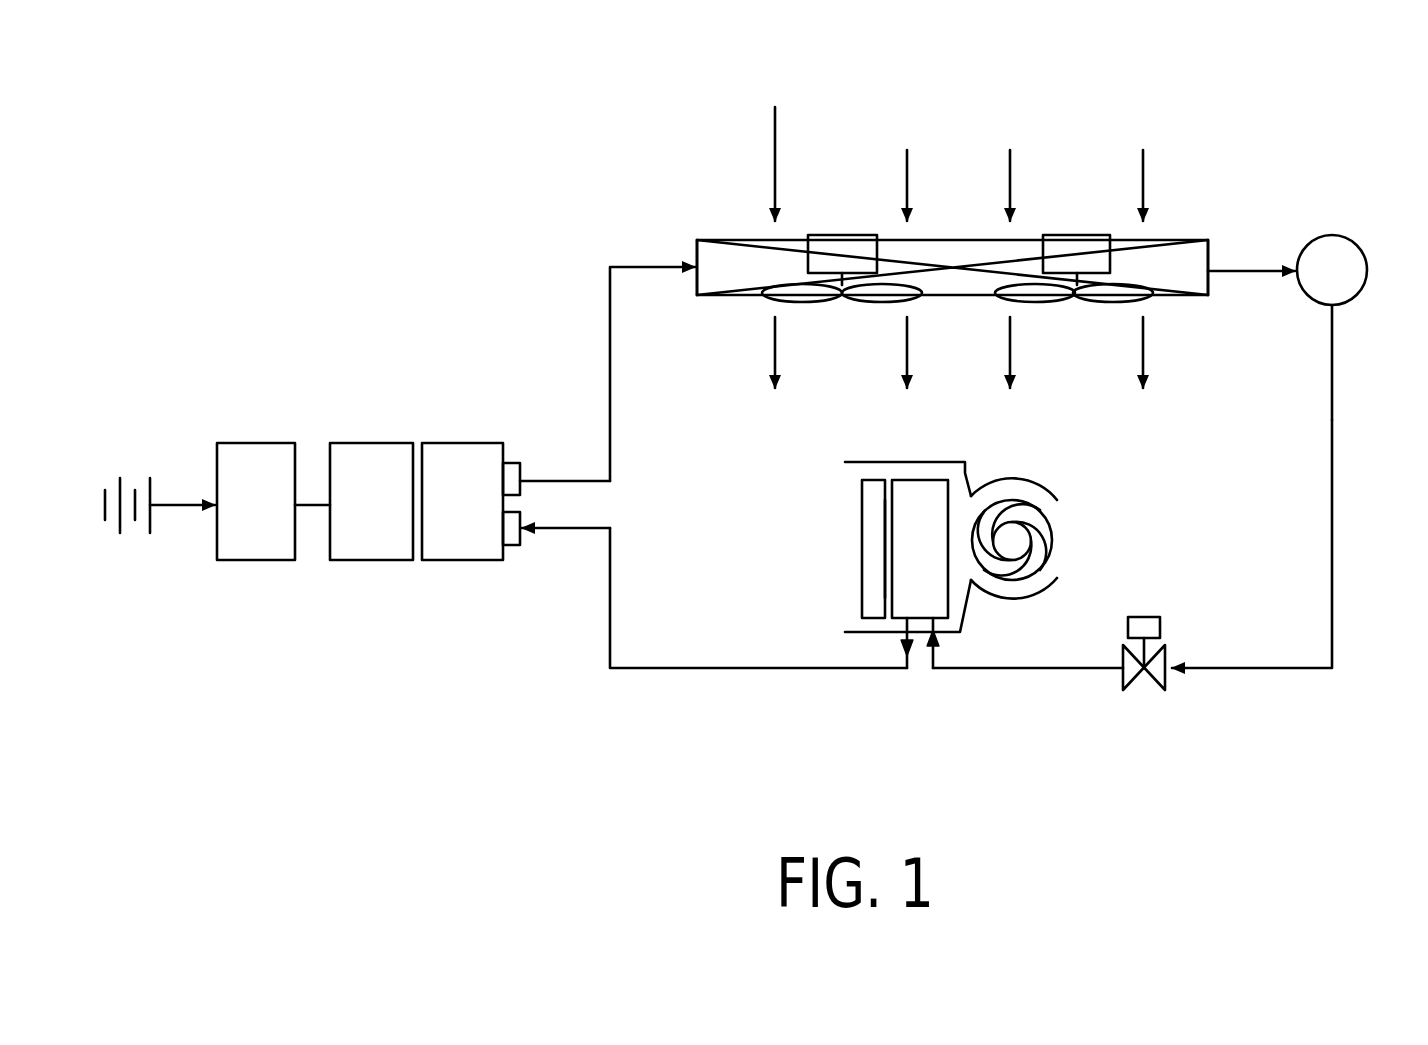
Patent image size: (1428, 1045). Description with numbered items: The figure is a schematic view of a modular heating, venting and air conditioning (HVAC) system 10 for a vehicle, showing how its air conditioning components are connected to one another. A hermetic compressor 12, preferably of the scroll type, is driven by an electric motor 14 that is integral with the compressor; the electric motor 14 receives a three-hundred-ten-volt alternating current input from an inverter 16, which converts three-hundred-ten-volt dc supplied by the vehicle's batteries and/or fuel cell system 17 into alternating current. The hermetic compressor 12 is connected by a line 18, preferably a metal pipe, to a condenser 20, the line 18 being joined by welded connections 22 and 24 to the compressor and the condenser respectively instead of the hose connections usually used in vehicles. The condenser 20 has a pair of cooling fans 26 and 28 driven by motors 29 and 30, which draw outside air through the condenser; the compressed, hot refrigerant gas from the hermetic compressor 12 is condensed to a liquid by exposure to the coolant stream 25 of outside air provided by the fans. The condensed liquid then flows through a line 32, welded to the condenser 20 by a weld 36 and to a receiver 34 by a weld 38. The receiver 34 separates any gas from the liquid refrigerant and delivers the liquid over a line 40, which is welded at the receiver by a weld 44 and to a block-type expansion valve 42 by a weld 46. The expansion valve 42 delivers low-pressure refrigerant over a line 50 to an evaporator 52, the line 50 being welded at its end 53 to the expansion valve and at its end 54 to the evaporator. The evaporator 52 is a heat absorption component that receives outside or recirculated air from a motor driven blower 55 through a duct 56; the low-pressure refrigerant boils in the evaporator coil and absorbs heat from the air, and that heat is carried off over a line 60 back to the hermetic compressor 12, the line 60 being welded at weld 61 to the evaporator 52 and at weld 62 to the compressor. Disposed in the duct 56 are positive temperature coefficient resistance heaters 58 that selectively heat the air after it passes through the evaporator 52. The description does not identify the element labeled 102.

The modular heating, venting and air conditioning (HVAC) system 10 is at (595, 262).
The hermetic compressor 12 is at (470, 440).
The electric motor 14 is at (387, 440).
The inverter 16 is at (258, 440).
The vehicle's batteries and/or fuel cell system 17 is at (135, 530).
The line 18 is at (610, 297).
The condenser 20 is at (744, 306).
The welded connection 22 is at (522, 480).
The welded connection 24 is at (682, 262).
The coolant stream 25 is at (775, 130).
The cooling fan 26 is at (882, 293).
The cooling fan 28 is at (1110, 293).
The motor 29 is at (852, 250).
The motor 30 is at (1083, 250).
The line 32 is at (1245, 275).
The receiver 34 is at (1318, 258).
The weld 36 is at (1215, 268).
The weld 38 is at (1278, 268).
The line 40 is at (1333, 428).
The block-type expansion valve 42 is at (1130, 691).
The weld 44 is at (1336, 306).
The weld 46 is at (1178, 676).
The line 50 is at (1048, 668).
The evaporator 52 is at (956, 475).
The end 53 is at (1120, 668).
The end 54 is at (938, 641).
The motor driven blower 55 is at (1046, 555).
The duct 56 is at (970, 596).
The positive temperature coefficient resistance heater (PTC heater) 58 is at (861, 505).
The line 60 is at (677, 666).
The weld 61 is at (903, 656).
The weld 62 is at (531, 540).
The filter 102 is at (890, 588).